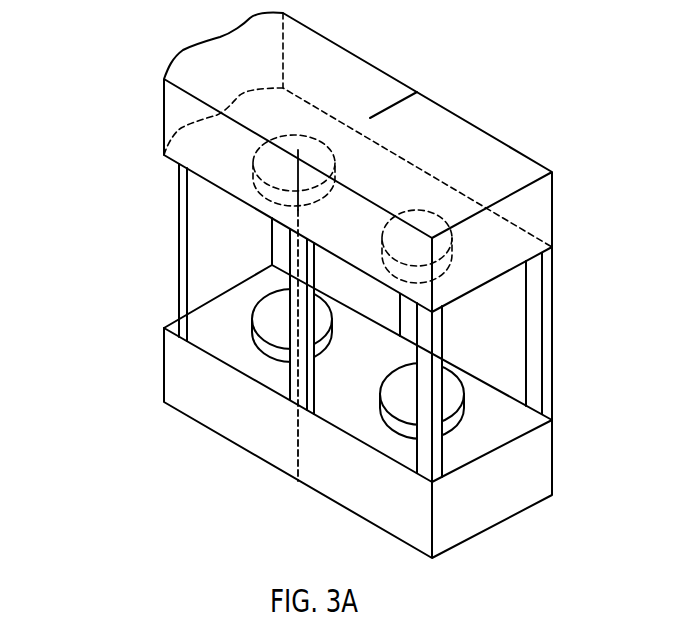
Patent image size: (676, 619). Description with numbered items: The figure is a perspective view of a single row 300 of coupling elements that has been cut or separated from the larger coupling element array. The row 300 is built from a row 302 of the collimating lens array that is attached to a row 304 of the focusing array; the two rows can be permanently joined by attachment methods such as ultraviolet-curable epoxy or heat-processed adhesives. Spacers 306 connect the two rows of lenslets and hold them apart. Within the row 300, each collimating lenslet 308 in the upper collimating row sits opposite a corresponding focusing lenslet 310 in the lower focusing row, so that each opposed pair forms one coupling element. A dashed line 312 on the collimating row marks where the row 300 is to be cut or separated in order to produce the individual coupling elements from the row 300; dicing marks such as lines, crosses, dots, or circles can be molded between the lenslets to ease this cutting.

The row 300 is at (330, 312).
The row of the collimating lens array 302 is at (163, 122).
The row of the focusing array 304 is at (163, 376).
The spacers 306 is at (165, 298).
The collimating lenslet 308 is at (280, 190).
The focusing lenslet 310 is at (268, 328).
The dashed line 312 is at (390, 107).